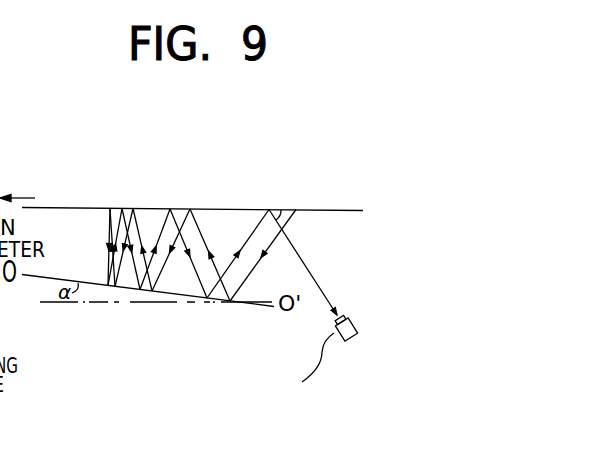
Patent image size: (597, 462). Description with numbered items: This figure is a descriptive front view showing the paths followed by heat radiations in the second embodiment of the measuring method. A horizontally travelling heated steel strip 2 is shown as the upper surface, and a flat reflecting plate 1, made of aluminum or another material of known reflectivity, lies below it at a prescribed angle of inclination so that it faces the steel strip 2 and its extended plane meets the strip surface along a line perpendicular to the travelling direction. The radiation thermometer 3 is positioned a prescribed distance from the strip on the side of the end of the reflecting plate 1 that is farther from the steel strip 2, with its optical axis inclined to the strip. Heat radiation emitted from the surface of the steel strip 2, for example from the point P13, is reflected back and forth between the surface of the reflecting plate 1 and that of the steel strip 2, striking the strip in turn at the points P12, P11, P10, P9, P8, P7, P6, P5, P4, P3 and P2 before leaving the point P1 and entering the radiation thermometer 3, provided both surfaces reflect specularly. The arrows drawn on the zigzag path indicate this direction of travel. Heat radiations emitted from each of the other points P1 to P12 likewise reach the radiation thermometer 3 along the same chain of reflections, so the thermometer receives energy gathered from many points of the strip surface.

The reflecting plate 1 is at (32, 283).
The steel strip 2 is at (42, 207).
The radiation thermometer 3 is at (347, 343).
The point P1 is at (270, 209).
The point P2 is at (208, 300).
The point P3 is at (170, 208).
The point P4 is at (140, 291).
The point P5 is at (123, 209).
The point P6 is at (108, 287).
The point P7 is at (112, 208).
The point P8 is at (116, 288).
The point P9 is at (132, 208).
The point P10 is at (153, 291).
The point P11 is at (190, 209).
The point P12 is at (231, 302).
The point P13 is at (296, 209).